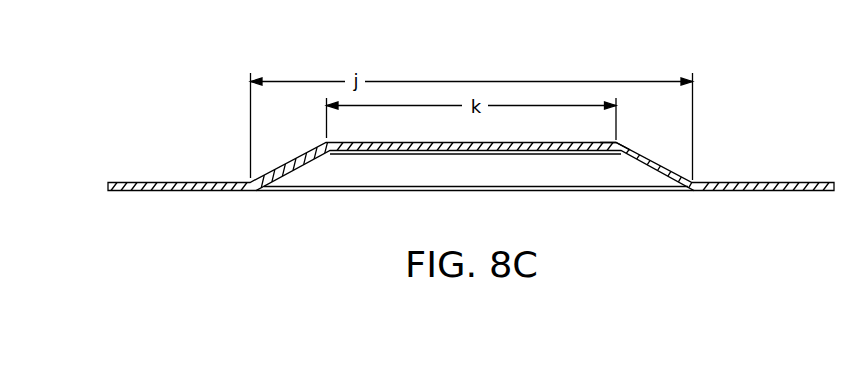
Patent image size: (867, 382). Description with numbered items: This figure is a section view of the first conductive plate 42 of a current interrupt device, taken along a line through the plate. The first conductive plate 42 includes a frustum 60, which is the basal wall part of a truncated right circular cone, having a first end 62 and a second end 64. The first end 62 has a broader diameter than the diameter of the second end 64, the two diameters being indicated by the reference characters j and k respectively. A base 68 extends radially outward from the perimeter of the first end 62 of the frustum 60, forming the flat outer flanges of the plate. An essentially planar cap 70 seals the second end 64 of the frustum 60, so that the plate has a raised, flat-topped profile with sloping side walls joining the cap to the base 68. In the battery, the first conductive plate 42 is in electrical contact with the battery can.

The first conductive plate 42 is at (163, 180).
The base 68 is at (198, 192).
The essentially planar cap 70 is at (374, 146).
The second end 64 is at (619, 142).
The frustum 60 is at (649, 160).
The first end 62 is at (726, 192).